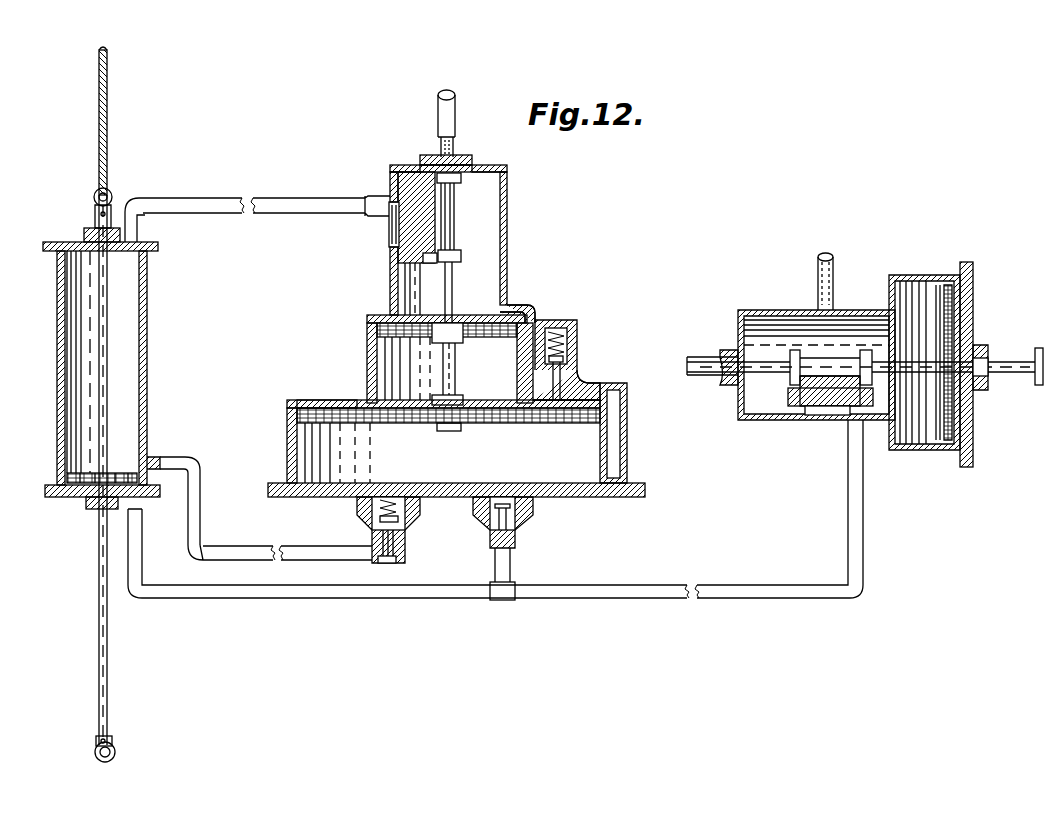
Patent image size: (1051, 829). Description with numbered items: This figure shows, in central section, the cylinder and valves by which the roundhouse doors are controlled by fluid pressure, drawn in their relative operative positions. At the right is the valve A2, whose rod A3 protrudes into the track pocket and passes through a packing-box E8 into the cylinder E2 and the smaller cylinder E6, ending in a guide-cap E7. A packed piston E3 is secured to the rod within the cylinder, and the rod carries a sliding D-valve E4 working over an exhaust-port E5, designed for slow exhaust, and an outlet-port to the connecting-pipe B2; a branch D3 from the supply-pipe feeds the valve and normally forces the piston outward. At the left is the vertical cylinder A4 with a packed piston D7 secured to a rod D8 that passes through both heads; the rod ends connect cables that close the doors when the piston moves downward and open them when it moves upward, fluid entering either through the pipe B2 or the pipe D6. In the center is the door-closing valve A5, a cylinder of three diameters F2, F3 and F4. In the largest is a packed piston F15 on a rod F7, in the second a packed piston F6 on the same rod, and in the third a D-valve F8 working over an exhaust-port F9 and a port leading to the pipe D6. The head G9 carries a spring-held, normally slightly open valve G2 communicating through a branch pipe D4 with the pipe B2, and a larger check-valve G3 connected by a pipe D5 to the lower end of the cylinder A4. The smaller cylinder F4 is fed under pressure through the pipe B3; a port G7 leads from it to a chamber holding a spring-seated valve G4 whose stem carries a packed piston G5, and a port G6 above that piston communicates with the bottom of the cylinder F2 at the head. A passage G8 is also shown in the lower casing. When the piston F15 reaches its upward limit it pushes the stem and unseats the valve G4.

The valve A2 is at (861, 374).
The rod A3 is at (1000, 358).
The cylinder A4 is at (150, 352).
The door-closing valve A5 is at (458, 248).
The connecting-pipe B2 is at (320, 590).
The pipe B3 is at (437, 111).
The branch D3 is at (818, 275).
The branch pipe D4 is at (512, 565).
The pipe D5 is at (247, 548).
The pipe D6 is at (300, 207).
The packed piston D7 is at (120, 466).
The rod D8 is at (98, 544).
The cylinder E2 is at (925, 448).
The packed piston E3 is at (924, 362).
The sliding D-valve E4 is at (798, 408).
The exhaust-port E5 is at (820, 415).
The smaller cylinder E6 is at (738, 413).
The guide-cap E7 is at (707, 358).
The packing-box E8 is at (988, 385).
The cylinder F2 is at (287, 453).
The cylinder F3 is at (367, 368).
The smaller cylinder F4 is at (390, 285).
The packed piston F6 is at (495, 330).
The rod F7 is at (463, 383).
The D-valve F8 is at (393, 190).
The exhaust-port F9 is at (389, 240).
The packed piston F15 is at (510, 425).
The valve G2 is at (520, 533).
The check-valve G3 is at (405, 540).
The valve G4 is at (577, 352).
The packed piston G5 is at (588, 375).
The port G6 is at (627, 400).
The port G7 is at (530, 300).
The passage G8 is at (345, 402).
The head G9 is at (557, 486).